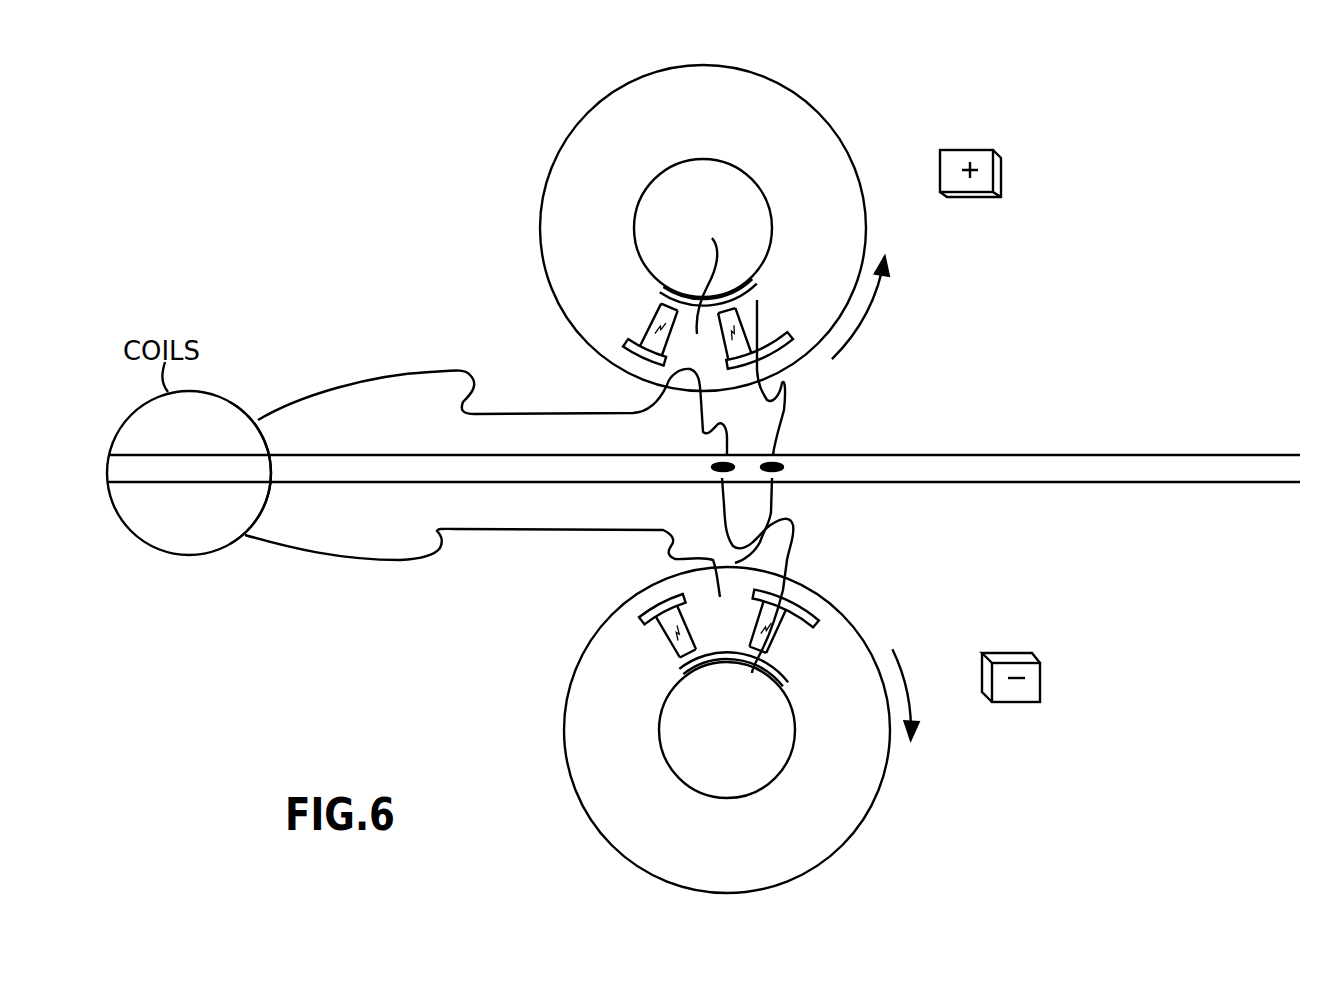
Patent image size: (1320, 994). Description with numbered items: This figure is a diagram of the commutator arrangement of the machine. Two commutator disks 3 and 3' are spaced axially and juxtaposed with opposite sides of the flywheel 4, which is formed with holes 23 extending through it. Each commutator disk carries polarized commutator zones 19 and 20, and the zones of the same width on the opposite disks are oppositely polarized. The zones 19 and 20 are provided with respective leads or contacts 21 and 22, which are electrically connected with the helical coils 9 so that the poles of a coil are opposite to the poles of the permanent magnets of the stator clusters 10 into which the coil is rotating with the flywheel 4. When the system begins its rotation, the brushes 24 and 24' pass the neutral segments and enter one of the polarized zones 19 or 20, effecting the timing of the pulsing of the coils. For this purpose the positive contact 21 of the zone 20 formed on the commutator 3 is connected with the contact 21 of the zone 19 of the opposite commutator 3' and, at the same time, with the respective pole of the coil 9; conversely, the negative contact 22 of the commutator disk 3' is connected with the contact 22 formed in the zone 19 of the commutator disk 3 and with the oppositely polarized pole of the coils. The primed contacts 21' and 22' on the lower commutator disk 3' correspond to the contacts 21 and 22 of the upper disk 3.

The commutator disk 3 is at (718, 226).
The commutator disk 3' is at (756, 733).
The flywheel 4 is at (372, 484).
The helical coil 9 is at (200, 538).
The cluster 10 is at (770, 338).
The commutator zone 19 is at (772, 664).
The commutator zone 20 is at (697, 279).
The positive contact 21 is at (492, 412).
The lead wire 21' is at (747, 662).
The negative contact 22 is at (751, 275).
The stator core 22' is at (733, 650).
The hole 23 is at (760, 472).
The brush 24 is at (984, 200).
The brush 24' is at (1033, 639).